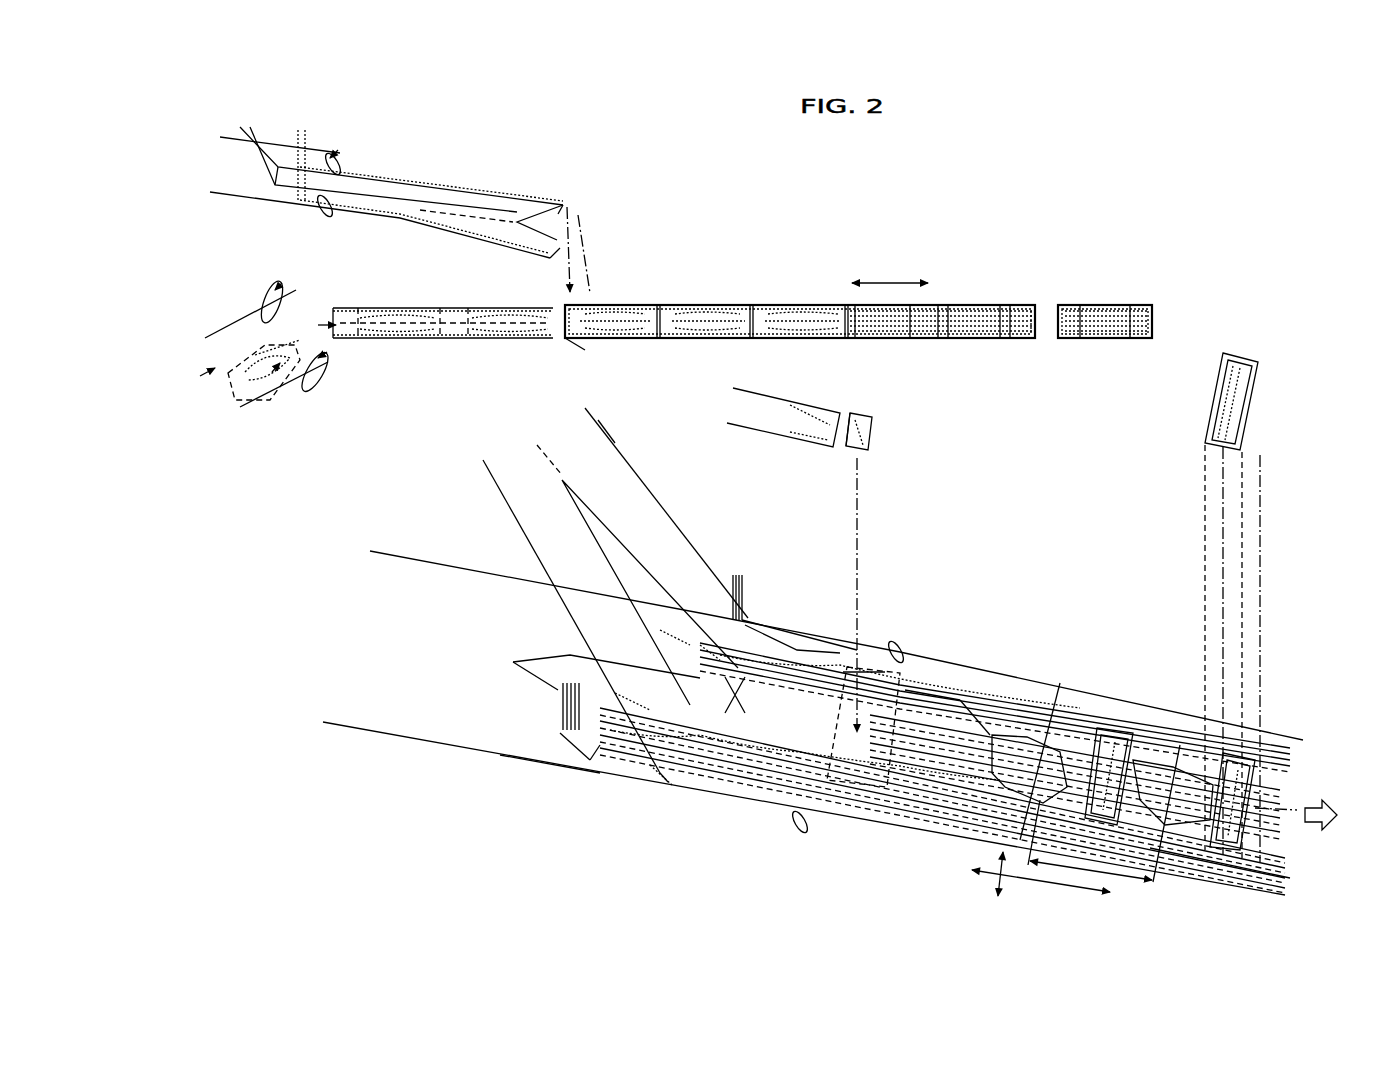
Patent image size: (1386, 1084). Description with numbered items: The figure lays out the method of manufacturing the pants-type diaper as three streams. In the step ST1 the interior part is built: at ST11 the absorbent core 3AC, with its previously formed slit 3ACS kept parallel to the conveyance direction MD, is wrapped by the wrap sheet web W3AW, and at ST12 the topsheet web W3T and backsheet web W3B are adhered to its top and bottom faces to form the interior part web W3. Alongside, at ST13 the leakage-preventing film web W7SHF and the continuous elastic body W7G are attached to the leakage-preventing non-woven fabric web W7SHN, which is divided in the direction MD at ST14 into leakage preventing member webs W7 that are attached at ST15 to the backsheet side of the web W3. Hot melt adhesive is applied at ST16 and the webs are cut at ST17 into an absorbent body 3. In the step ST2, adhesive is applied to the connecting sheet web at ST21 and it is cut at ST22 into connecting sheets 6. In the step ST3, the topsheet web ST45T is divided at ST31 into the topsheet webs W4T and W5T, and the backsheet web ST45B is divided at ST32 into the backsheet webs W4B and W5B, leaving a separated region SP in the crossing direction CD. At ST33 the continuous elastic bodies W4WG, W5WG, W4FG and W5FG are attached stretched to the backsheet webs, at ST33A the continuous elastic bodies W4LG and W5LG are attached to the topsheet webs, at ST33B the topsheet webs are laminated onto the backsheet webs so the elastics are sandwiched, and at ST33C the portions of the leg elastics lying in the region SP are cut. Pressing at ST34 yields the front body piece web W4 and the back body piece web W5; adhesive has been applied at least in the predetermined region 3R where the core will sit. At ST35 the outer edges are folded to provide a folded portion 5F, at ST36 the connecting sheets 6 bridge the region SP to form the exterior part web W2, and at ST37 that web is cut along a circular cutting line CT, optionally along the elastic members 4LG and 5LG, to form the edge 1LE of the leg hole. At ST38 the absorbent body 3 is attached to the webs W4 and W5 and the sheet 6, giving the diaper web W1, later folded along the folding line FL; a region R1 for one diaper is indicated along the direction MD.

The leakage-preventing film web W7SHF is at (258, 132).
The continuous elastic body W7G is at (308, 145).
The leakage-preventing non-woven fabric web W7SHN is at (225, 183).
The attaching step ST13 is at (362, 162).
The leakage preventing member web W7 is at (550, 200).
The dividing step ST14 is at (520, 186).
The adhering step ST12 is at (592, 294).
The interior part manufacturing step ST1 is at (240, 265).
The wrapping step ST11 is at (287, 289).
The absorbent core 3AC is at (252, 410).
The slit 3ACS is at (297, 390).
The wrap sheet web W3AW is at (287, 395).
The attaching step ST15 is at (537, 290).
The interior part web W3 is at (627, 305).
The topsheet web W3T is at (580, 297).
The backsheet web W3B is at (563, 355).
The conveyance direction MD is at (981, 579).
The adhesive applying step ST16 is at (932, 298).
The cutting step ST17 is at (1048, 298).
The interior part 3 is at (1142, 305).
The connecting sheet manufacturing step ST2 is at (940, 405).
The adhesive applying step ST21 is at (815, 393).
The connecting sheet 6 is at (877, 430).
The cutting step ST22 is at (853, 405).
The connecting sheet attaching step ST36 is at (870, 520).
The topsheet dividing step ST31 is at (605, 412).
The topsheet web W4T is at (606, 452).
The topsheet web ST45T is at (510, 458).
The topsheet web W5T is at (523, 500).
The backsheet web W4B is at (413, 567).
The continuous elastic body W4LG is at (687, 640).
The continuous elastic body W4FG is at (713, 653).
The continuous elastic body W4WG is at (753, 580).
The elastic attaching step ST33 is at (717, 496).
The elastic cutting step ST33C is at (757, 612).
The front body piece web W4 is at (833, 653).
The folding step ST35 is at (925, 628).
The elastic member 4LG is at (985, 720).
The leg hole cutting step ST37 is at (1070, 675).
The circular cutting line CT is at (1060, 683).
The edge 1LE is at (1053, 755).
The interior part attaching step ST38 is at (1307, 700).
The folding line FL is at (1300, 807).
The diaper web manufacturing step ST3 is at (312, 737).
The back body piece web W5 is at (753, 800).
The diaper web W1 is at (1295, 865).
The backsheet web W5B is at (443, 733).
The backsheet dividing step ST32 is at (387, 763).
The separated region SP is at (523, 667).
The continuous elastic body W5WG is at (560, 707).
The continuous elastic body W5FG is at (583, 790).
The continuous elastic body W5LG is at (507, 590).
The backsheet web ST45B is at (373, 653).
The laminating step ST33B is at (675, 787).
The leg elastic attaching step ST33A is at (603, 849).
The pressing step ST34 is at (717, 829).
The folded portion 5F is at (853, 820).
The predetermined region 3R is at (890, 795).
The exterior part web W2 is at (925, 822).
The elastic member 5LG is at (987, 830).
The crossing direction CD is at (984, 878).
The region 1 R1 is at (1106, 823).